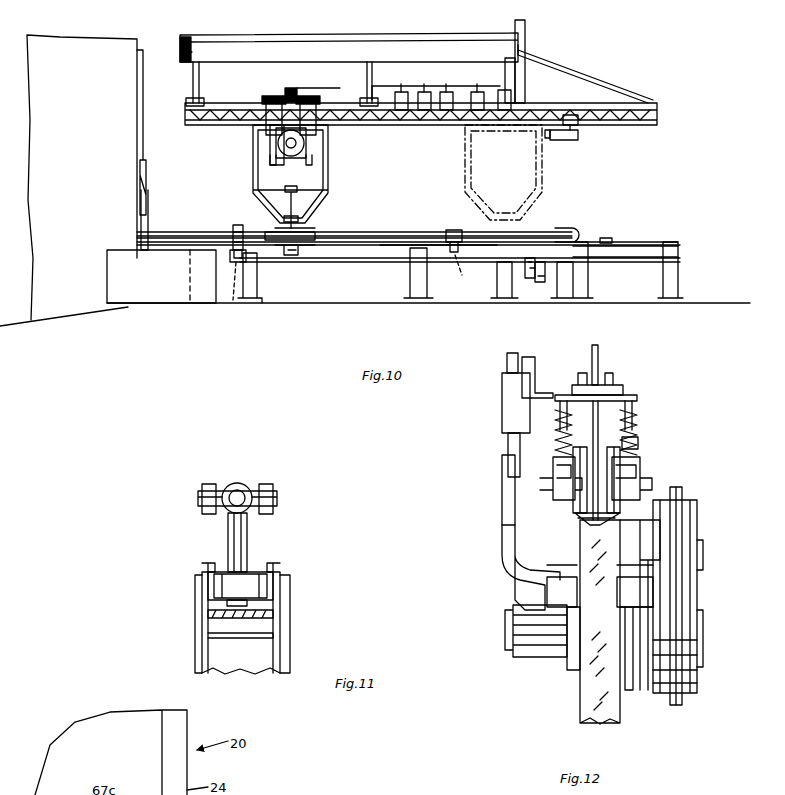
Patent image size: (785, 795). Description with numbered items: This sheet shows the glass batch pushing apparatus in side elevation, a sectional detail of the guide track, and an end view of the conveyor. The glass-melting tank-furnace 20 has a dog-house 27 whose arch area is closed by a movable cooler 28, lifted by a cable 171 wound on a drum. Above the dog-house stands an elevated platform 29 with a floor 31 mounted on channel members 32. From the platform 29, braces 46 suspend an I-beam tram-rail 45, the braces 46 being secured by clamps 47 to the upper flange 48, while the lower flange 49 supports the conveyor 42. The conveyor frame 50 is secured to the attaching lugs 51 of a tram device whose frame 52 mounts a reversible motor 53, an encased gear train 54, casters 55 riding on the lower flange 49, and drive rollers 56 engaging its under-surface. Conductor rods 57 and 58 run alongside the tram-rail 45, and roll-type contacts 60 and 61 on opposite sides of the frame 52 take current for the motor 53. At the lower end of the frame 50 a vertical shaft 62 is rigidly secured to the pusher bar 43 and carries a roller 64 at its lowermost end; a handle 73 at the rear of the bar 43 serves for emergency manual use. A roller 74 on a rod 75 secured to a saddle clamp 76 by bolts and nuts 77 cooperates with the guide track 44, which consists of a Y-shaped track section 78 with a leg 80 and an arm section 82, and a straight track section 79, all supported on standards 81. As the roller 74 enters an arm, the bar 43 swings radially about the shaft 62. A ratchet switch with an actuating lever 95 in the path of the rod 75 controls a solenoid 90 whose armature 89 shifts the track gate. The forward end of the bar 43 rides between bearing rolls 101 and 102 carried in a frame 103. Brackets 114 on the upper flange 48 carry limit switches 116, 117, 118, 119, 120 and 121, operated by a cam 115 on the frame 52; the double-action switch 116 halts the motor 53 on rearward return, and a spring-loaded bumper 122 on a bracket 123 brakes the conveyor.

In FIG. 10, the glass-melting tank-furnace 20 is at (85, 285).
In FIG. 10, the dog-house 27 is at (173, 275).
In FIG. 10, the cooler 28 is at (148, 200).
In FIG. 10, the platform 29 is at (527, 38).
In FIG. 10, the floor 31 is at (218, 50).
In FIG. 10, the channel members 32 is at (182, 60).
In FIG. 10, the conveyor 42 is at (252, 164).
In FIG. 12, the conveyor 42 is at (552, 660).
In FIG. 10, the pusher bar 43 is at (390, 230).
In FIG. 11, the pusher bar 43 is at (248, 489).
In FIG. 10, the guide track 44 is at (373, 262).
In FIG. 11, the guide track 44 is at (300, 580).
In FIG. 10, the tram-rail 45 is at (620, 120).
In FIG. 12, the tram-rail 45 is at (600, 425).
In FIG. 10, the braces 46 is at (199, 78).
In FIG. 12, the braces 46 is at (600, 358).
In FIG. 12, the clamps 47 is at (623, 386).
In FIG. 12, the upper flange 48 is at (637, 398).
In FIG. 12, the lower flange 49 is at (580, 530).
In FIG. 10, the conveyor frame 50 is at (330, 183).
In FIG. 12, the conveyor frame 50 is at (596, 680).
In FIG. 12, the attaching lugs 51 is at (690, 500).
In FIG. 10, the tram frame 52 is at (270, 138).
In FIG. 12, the tram frame 52 is at (520, 522).
In FIG. 10, the reversible motor 53 is at (306, 150).
In FIG. 12, the reversible motor 53 is at (530, 635).
In FIG. 12, the encased gear train 54 is at (690, 580).
In FIG. 10, the supporting casters 55 is at (280, 100).
In FIG. 12, the supporting casters 55 is at (557, 468).
In FIG. 12, the drive rollers 56 is at (612, 535).
In FIG. 12, the conductor rod 57 is at (560, 430).
In FIG. 12, the conductor rod 58 is at (640, 430).
In FIG. 10, the roll-type contacts 60 is at (232, 118).
In FIG. 12, the roll-type contacts 60 is at (556, 436).
In FIG. 12, the roll-type contacts 61 is at (640, 444).
In FIG. 10, the shaft 62 is at (300, 212).
In FIG. 10, the roller 64 is at (302, 255).
In FIG. 10, the handle 73 is at (558, 228).
In FIG. 10, the roller 74 is at (459, 275).
In FIG. 11, the roller 74 is at (270, 575).
In FIG. 11, the rod 75 is at (247, 540).
In FIG. 11, the saddle clamp 76 is at (233, 484).
In FIG. 11, the bolts and nuts 77 is at (205, 484).
In FIG. 10, the Y-shaped track section 78 is at (626, 236).
In FIG. 11, the Y-shaped track section 78 is at (200, 568).
In FIG. 10, the straight track section 79 is at (338, 262).
In FIG. 10, the leg 80 is at (645, 245).
In FIG. 11, the leg 80 is at (214, 592).
In FIG. 10, the standards 81 is at (257, 286).
In FIG. 11, the standards 81 is at (202, 634).
In FIG. 10, the arm section 82 is at (472, 252).
In FIG. 10, the armature 89 is at (527, 280).
In FIG. 10, the solenoid 90 is at (541, 283).
In FIG. 10, the actuating lever 95 is at (604, 238).
In FIG. 10, the bearing roll 101 is at (232, 235).
In FIG. 10, the bearing roll 102 is at (240, 294).
In FIG. 10, the frame 103 is at (236, 226).
In FIG. 12, the brackets 114 is at (530, 372).
In FIG. 10, the cam 115 is at (285, 160).
In FIG. 12, the cam 115 is at (502, 486).
In FIG. 10, the double-action switch 116 is at (515, 90).
In FIG. 12, the double-action switch 116 is at (512, 404).
In FIG. 10, the switch 117 is at (487, 88).
In FIG. 10, the switch 118 is at (457, 88).
In FIG. 10, the switch 119 is at (432, 88).
In FIG. 10, the switch 120 is at (398, 88).
In FIG. 10, the switch 121 is at (296, 90).
In FIG. 10, the spring-loaded bumper 122 is at (549, 140).
In FIG. 10, the bracket 123 is at (577, 128).
In FIG. 10, the cable 171 is at (142, 138).